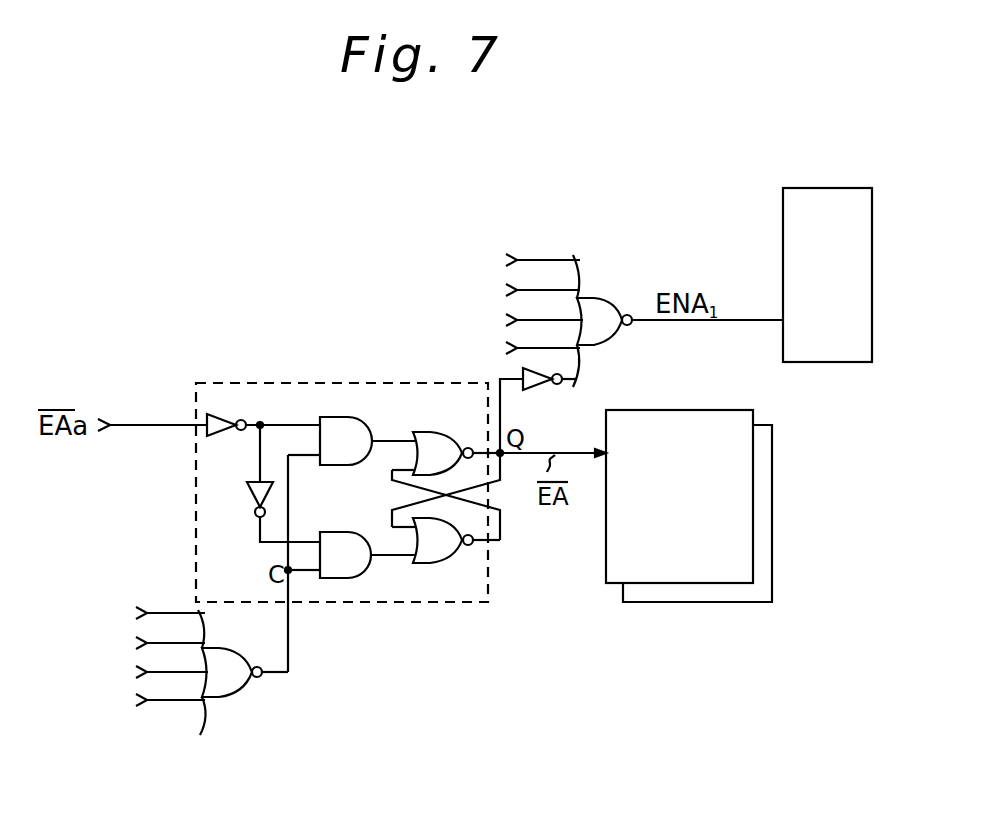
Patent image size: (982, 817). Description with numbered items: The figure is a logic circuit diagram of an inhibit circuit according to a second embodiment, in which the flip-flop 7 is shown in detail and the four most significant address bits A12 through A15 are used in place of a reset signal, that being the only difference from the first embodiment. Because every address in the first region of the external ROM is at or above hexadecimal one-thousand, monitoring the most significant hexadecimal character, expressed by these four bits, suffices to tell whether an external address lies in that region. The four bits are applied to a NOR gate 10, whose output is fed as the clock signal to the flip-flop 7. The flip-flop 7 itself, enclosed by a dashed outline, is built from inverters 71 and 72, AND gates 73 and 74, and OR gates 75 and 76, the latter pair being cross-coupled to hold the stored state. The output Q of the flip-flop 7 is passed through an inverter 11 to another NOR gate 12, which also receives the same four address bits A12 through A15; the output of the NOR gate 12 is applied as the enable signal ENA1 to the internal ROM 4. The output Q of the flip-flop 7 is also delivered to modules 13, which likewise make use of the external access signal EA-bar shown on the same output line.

The internal ROM 4 is at (825, 188).
The flip-flop 7 is at (468, 604).
The NOR gate 10 is at (232, 697).
The inverter 11 is at (540, 390).
The NOR gate 12 is at (607, 298).
The modules 13 is at (700, 410).
The inverter 71 is at (240, 399).
The inverter 72 is at (254, 508).
The AND gate 73 is at (340, 417).
The AND gate 74 is at (352, 578).
The OR gate 75 is at (432, 432).
The OR gate 76 is at (430, 563).